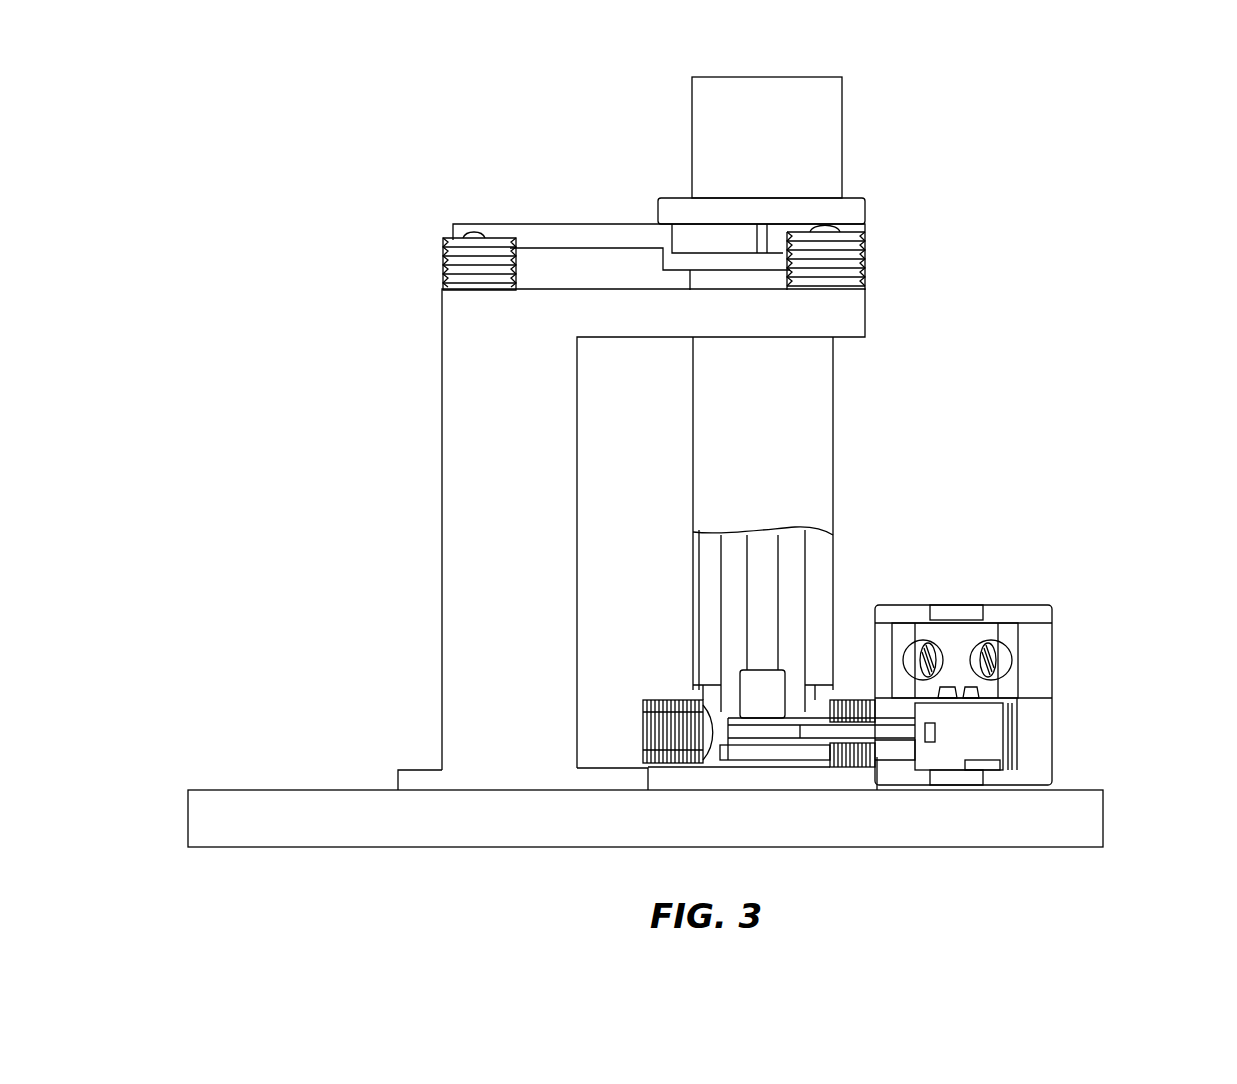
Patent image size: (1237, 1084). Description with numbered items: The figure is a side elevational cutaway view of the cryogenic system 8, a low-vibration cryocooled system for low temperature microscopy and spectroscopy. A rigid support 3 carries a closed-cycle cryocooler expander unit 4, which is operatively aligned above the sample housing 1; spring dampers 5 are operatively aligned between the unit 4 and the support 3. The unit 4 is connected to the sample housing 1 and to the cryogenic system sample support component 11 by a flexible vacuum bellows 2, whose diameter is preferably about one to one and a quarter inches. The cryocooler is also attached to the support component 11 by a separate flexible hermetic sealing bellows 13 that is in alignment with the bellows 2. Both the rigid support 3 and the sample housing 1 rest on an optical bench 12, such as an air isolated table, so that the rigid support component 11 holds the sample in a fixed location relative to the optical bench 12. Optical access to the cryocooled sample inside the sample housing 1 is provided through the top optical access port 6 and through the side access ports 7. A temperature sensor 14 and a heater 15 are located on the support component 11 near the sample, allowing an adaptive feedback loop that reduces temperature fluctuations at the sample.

The sample housing 1 is at (1058, 642).
The bellows 2 is at (957, 592).
The support 3 is at (875, 313).
The closed-cycle cryocooler expander unit 4 is at (850, 137).
The spring dampers 5 is at (875, 260).
The top optical access port 6 is at (853, 690).
The side access ports 7 is at (1016, 658).
The cryogenic system 8 is at (272, 173).
The cryogenic system sample support component 11 is at (1016, 718).
The optical bench 12 is at (1112, 812).
The flexible hermetic sealing bellows 13 is at (673, 690).
The temperature sensor 14 is at (975, 677).
The heater 15 is at (950, 677).